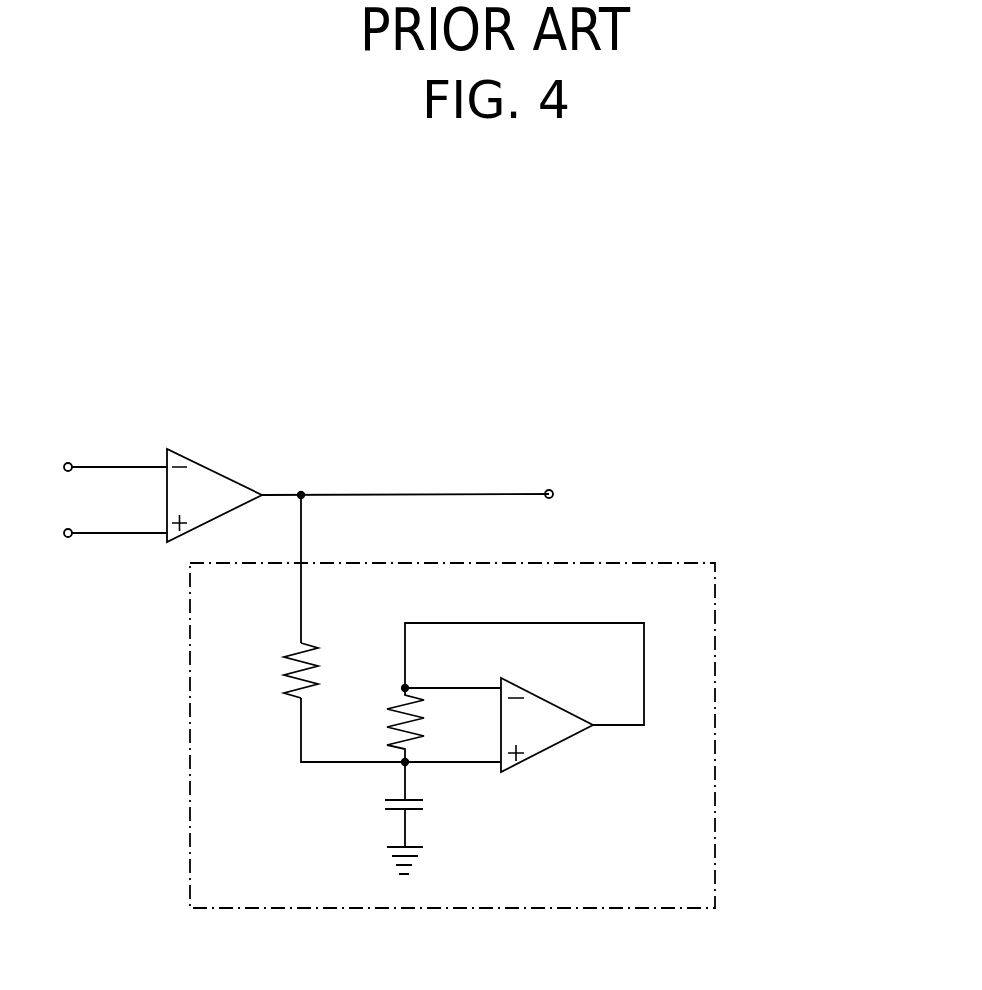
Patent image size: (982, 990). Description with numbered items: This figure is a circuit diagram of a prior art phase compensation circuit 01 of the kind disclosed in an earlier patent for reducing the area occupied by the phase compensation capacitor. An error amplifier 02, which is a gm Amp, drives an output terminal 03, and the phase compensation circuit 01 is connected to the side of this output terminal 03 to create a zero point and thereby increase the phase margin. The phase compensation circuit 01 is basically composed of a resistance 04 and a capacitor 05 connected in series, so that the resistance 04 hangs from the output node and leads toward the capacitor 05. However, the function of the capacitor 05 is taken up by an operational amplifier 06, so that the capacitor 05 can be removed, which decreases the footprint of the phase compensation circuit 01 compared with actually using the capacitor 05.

The phase compensation circuit 01 is at (715, 640).
The error amplifier 02 is at (218, 468).
The output terminal 03 is at (550, 486).
The resistance 04 is at (287, 672).
The capacitor 05 is at (420, 812).
The operational amplifier 06 is at (558, 743).